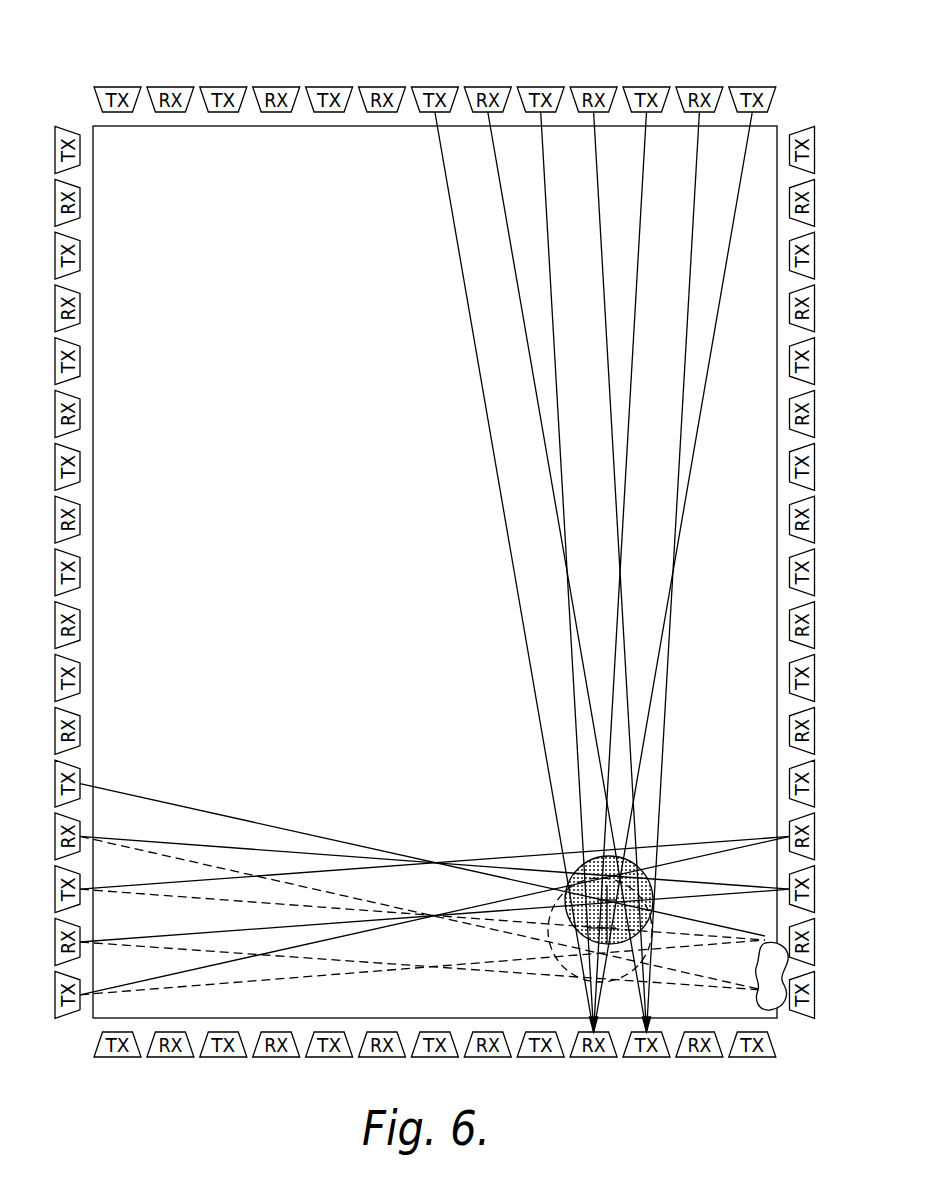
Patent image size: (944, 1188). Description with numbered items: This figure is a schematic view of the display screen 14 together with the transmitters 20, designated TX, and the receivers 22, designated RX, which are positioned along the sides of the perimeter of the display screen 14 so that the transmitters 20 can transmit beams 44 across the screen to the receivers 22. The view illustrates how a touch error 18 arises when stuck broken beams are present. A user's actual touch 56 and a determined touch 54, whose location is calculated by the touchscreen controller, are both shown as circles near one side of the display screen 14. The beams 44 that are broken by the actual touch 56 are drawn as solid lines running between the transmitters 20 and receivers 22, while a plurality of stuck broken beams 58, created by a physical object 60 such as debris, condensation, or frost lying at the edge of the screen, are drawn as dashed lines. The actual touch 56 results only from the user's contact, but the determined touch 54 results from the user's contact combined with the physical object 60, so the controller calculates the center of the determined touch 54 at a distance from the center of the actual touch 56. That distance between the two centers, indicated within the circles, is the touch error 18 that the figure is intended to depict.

The display screen 14 is at (158, 174).
The touch error 18 is at (604, 912).
The transmitters 20 is at (232, 82).
The receivers 22 is at (390, 82).
The beams 44 is at (255, 822).
The determined touch 54 is at (648, 862).
The actual touch 56 is at (548, 950).
The stuck broken beams 58 is at (281, 982).
The physical object 60 is at (787, 969).